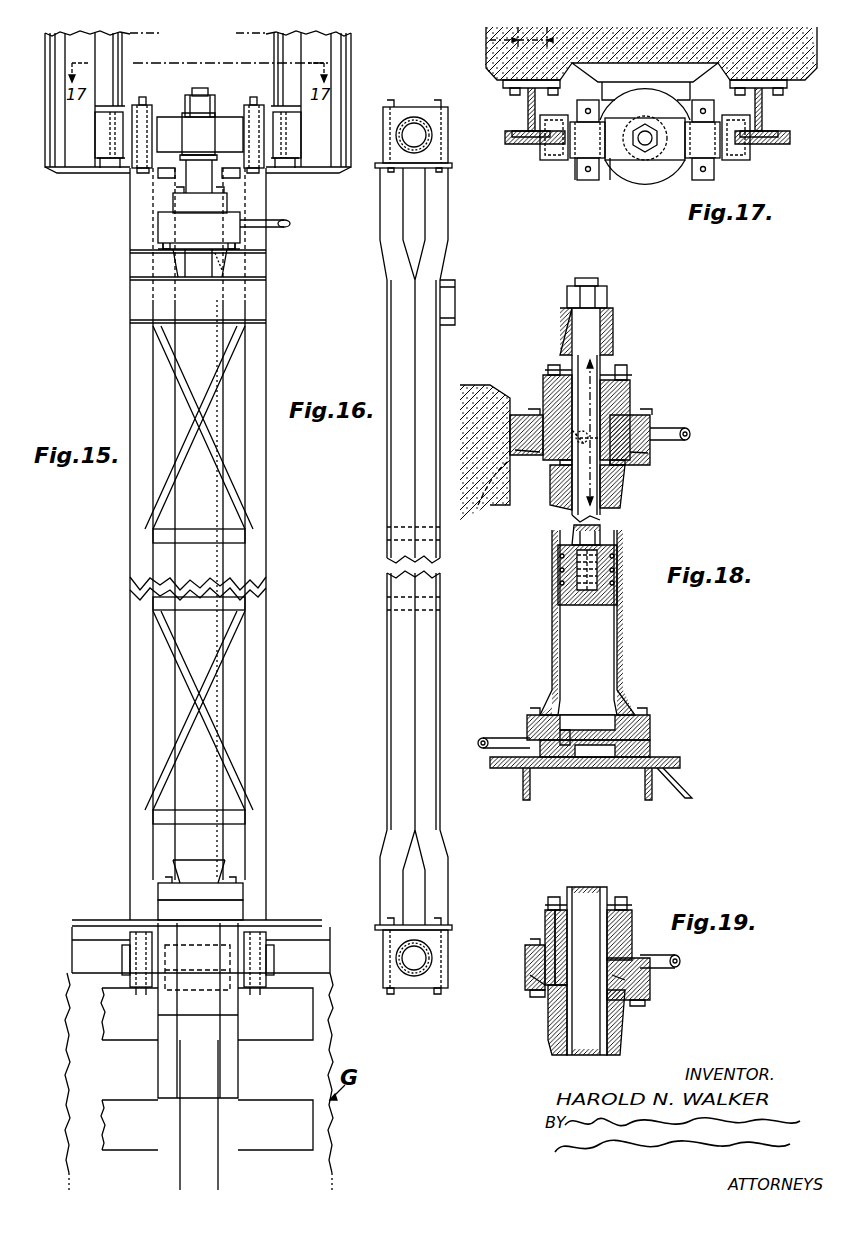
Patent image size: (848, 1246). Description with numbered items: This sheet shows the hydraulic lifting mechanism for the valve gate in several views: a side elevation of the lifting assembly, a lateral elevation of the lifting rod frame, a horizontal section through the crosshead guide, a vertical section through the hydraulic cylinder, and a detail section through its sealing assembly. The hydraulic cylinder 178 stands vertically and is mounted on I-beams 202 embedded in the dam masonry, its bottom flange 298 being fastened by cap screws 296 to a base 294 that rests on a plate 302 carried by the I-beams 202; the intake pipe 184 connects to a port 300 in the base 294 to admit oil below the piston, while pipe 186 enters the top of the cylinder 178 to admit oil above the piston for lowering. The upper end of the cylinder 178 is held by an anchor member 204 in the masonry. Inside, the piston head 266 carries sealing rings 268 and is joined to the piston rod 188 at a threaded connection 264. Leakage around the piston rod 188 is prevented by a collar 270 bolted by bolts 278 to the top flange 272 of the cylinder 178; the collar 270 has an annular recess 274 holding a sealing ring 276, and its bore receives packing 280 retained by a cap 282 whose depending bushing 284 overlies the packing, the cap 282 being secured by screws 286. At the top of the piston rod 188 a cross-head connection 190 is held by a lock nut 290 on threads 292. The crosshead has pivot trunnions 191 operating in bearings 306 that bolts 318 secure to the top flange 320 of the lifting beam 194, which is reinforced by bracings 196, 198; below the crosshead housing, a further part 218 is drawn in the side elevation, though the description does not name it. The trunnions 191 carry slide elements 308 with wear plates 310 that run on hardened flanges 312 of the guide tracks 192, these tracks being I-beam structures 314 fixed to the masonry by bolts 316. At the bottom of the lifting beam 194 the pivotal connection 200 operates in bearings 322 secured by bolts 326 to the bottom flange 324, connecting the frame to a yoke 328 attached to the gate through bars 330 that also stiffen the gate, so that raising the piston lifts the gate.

In FIG. 15, the hydraulic lifting cylinder 178 is at (205, 370).
In FIG. 18, the hydraulic lifting cylinder 178 is at (613, 668).
In FIG. 19, the hydraulic lifting cylinder 178 is at (620, 1038).
In FIG. 18, the pipe 184 is at (483, 749).
In FIG. 15, the pipe 186 is at (276, 230).
In FIG. 18, the pipe 186 is at (687, 433).
In FIG. 19, the pipe 186 is at (680, 962).
In FIG. 15, the piston rod 188 is at (214, 175).
In FIG. 18, the piston rod 188 is at (600, 360).
In FIG. 19, the piston rod 188 is at (577, 1050).
In FIG. 15, the cross-head connection 190 is at (222, 115).
In FIG. 17, the cross-head connection 190 is at (675, 160).
In FIG. 18, the cross-head connection 190 is at (612, 318).
In FIG. 17, the pivot trunnions 191 is at (575, 170).
In FIG. 15, the guide tracks 192 is at (90, 170).
In FIG. 17, the guide tracks 192 is at (500, 90).
In FIG. 15, the lifting beam 194 is at (130, 698).
In FIG. 15, the bracings 196 is at (225, 465).
In FIG. 15, the bracings 198 is at (232, 545).
In FIG. 15, the pivotal connection 200 is at (290, 960).
In FIG. 18, the I-beams 202 is at (645, 773).
In FIG. 17, the anchor member 204 is at (603, 96).
In FIG. 18, the anchor member 204 is at (485, 454).
In FIG. 15, the support leg 218 is at (197, 252).
In FIG. 18, the threaded connection 264 is at (615, 582).
In FIG. 18, the piston head 266 is at (565, 594).
In FIG. 18, the sealing rings 268 is at (560, 570).
In FIG. 15, the collar 270 is at (160, 235).
In FIG. 17, the collar 270 is at (630, 185).
In FIG. 18, the collar 270 is at (650, 425).
In FIG. 19, the collar 270 is at (525, 960).
In FIG. 15, the top flange 272 is at (185, 285).
In FIG. 18, the top flange 272 is at (645, 458).
In FIG. 19, the top flange 272 is at (535, 997).
In FIG. 18, the annular recess 274 is at (635, 455).
In FIG. 19, the annular recess 274 is at (635, 982).
In FIG. 18, the sealing ring 276 is at (635, 480).
In FIG. 19, the sealing ring 276 is at (550, 1020).
In FIG. 15, the bolts 278 is at (232, 250).
In FIG. 18, the bolts 278 is at (535, 410).
In FIG. 18, the packing 280 is at (550, 415).
In FIG. 19, the packing 280 is at (575, 905).
In FIG. 17, the cap 282 is at (652, 108).
In FIG. 18, the cap 282 is at (560, 372).
In FIG. 19, the cap 282 is at (620, 910).
In FIG. 18, the bushing 284 is at (632, 388).
In FIG. 19, the bushing 284 is at (632, 925).
In FIG. 15, the screws 286 is at (199, 218).
In FIG. 18, the screws 286 is at (553, 365).
In FIG. 19, the screws 286 is at (554, 897).
In FIG. 15, the lock nut 290 is at (190, 95).
In FIG. 17, the lock nut 290 is at (640, 162).
In FIG. 18, the lock nut 290 is at (598, 286).
In FIG. 15, the threads 292 is at (205, 88).
In FIG. 18, the threads 292 is at (573, 285).
In FIG. 15, the base 294 is at (225, 908).
In FIG. 18, the base 294 is at (650, 742).
In FIG. 15, the cap screws 296 is at (165, 878).
In FIG. 18, the cap screws 296 is at (535, 708).
In FIG. 15, the bottom flange 298 is at (160, 892).
In FIG. 18, the bottom flange 298 is at (530, 718).
In FIG. 18, the port 300 is at (560, 755).
In FIG. 18, the plate 302 is at (682, 760).
In FIG. 15, the bearings 306 is at (138, 165).
In FIG. 16, the bearings 306 is at (448, 165).
In FIG. 17, the bearings 306 is at (605, 158).
In FIG. 15, the slide elements 308 is at (105, 138).
In FIG. 17, the slide elements 308 is at (548, 155).
In FIG. 15, the wear plates 310 is at (108, 168).
In FIG. 17, the wear plates 310 is at (578, 113).
In FIG. 17, the hardened flanges 312 is at (540, 150).
In FIG. 17, the I-beam structures 314 is at (520, 130).
In FIG. 17, the bolts 316 is at (490, 42).
In FIG. 15, the bolts 318 is at (143, 96).
In FIG. 16, the bolts 318 is at (436, 100).
In FIG. 17, the bolts 318 is at (590, 165).
In FIG. 15, the top flange 320 is at (245, 160).
In FIG. 16, the top flange 320 is at (448, 190).
In FIG. 17, the top flange 320 is at (471, 224).
In FIG. 15, the bearings 322 is at (132, 940).
In FIG. 16, the bearings 322 is at (448, 945).
In FIG. 15, the bottom flange 324 is at (130, 930).
In FIG. 16, the bottom flange 324 is at (452, 928).
In FIG. 15, the bolts 326 is at (142, 990).
In FIG. 16, the bolts 326 is at (453, 905).
In FIG. 15, the yoke 328 is at (185, 1075).
In FIG. 15, the bars 330 is at (140, 1040).